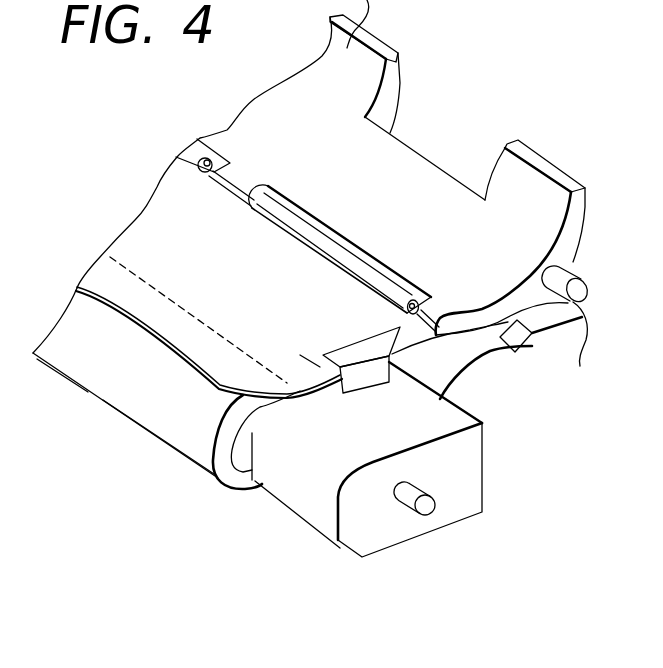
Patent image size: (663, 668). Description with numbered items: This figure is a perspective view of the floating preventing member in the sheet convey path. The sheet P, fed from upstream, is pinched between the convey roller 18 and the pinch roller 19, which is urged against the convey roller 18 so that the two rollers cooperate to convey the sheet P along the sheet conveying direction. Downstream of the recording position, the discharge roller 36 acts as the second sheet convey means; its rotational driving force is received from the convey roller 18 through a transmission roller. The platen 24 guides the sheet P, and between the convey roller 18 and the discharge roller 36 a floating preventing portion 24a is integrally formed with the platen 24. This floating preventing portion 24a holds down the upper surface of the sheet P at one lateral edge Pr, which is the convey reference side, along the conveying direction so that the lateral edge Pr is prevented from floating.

The sheet P is at (147, 235).
The lateral edge Pr is at (320, 378).
The convey roller 18 is at (428, 360).
The pinch roller 19 is at (323, 238).
The platen 24 is at (310, 508).
The floating preventing portion 24a is at (367, 377).
The discharge roller 36 is at (140, 419).